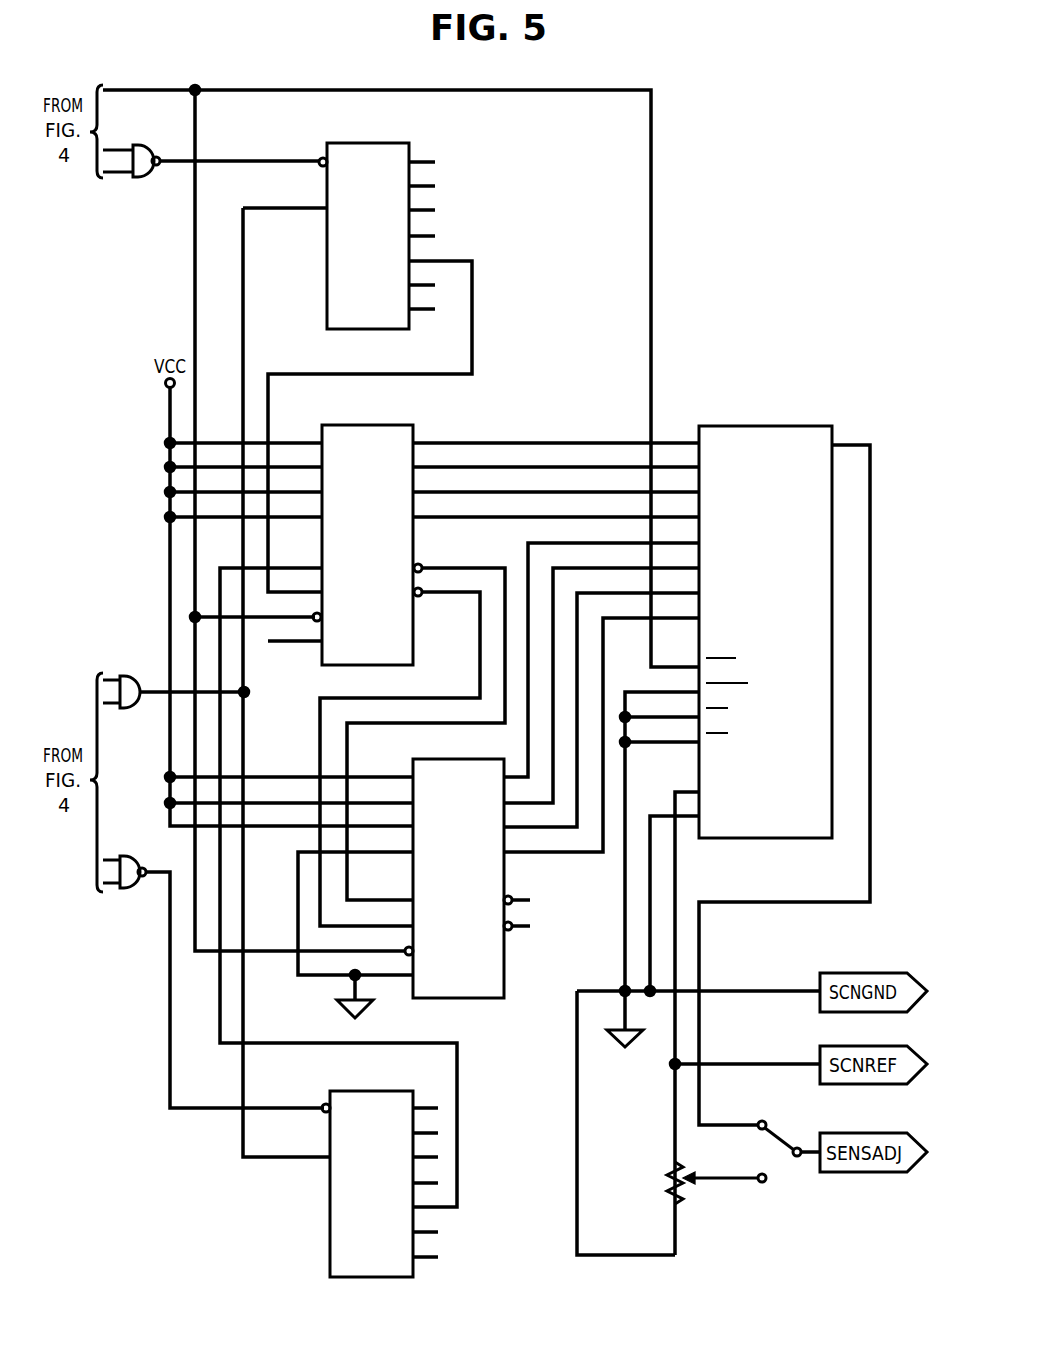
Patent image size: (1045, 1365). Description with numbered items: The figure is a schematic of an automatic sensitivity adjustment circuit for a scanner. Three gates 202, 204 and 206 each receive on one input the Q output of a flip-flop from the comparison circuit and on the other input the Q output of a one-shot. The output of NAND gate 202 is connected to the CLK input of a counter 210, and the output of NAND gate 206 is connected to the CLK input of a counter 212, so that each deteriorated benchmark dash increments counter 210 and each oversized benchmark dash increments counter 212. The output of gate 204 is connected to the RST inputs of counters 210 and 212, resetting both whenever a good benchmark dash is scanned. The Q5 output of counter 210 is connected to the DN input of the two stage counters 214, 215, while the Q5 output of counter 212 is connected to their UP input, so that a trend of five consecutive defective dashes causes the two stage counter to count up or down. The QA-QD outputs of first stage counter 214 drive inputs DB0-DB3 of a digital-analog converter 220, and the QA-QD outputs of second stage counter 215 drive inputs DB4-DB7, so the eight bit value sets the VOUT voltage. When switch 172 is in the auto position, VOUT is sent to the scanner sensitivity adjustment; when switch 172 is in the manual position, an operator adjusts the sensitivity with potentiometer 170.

The NAND gate 202 is at (138, 180).
The NAND gate 204 is at (128, 712).
The NAND gate 206 is at (133, 893).
The counter 210 is at (327, 281).
The counter 212 is at (330, 1197).
The first stage counter 214 is at (395, 425).
The second stage counter 215 is at (487, 998).
The digital-analog converter 220 is at (750, 426).
The potentiometer 170 is at (703, 1185).
The switch 172 is at (812, 1130).